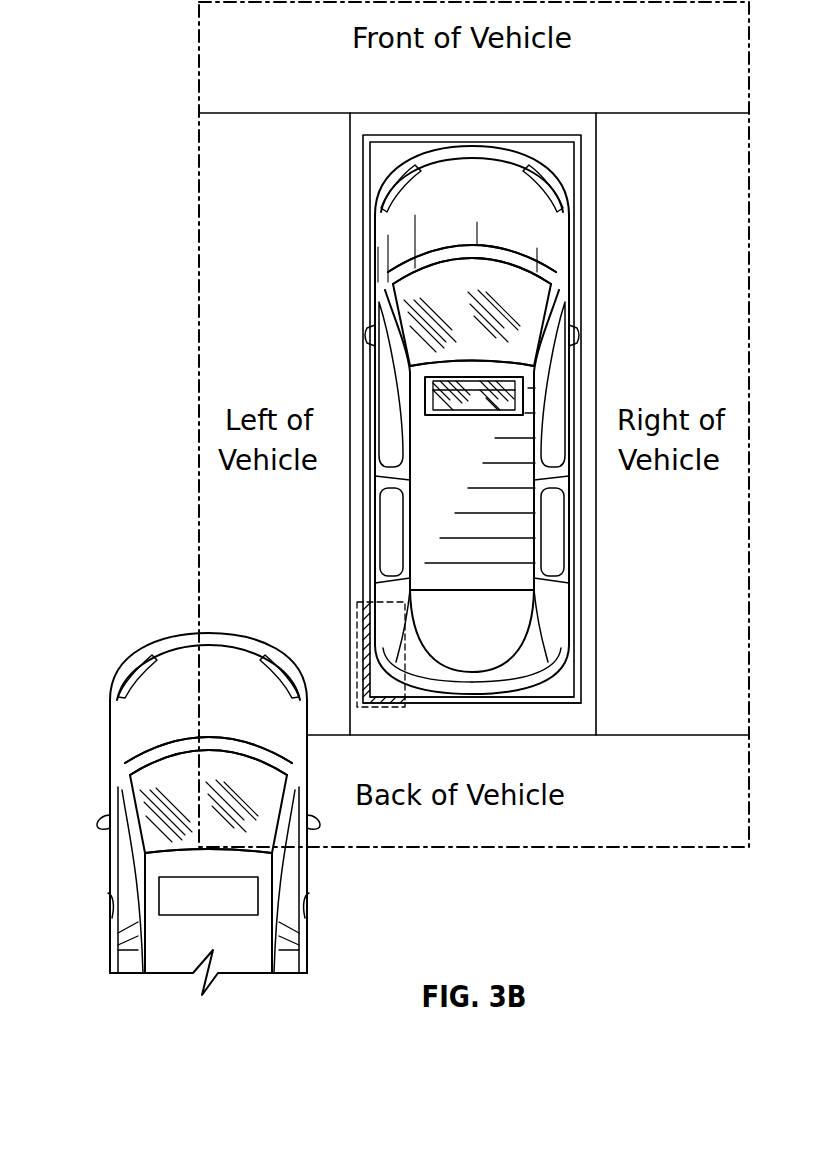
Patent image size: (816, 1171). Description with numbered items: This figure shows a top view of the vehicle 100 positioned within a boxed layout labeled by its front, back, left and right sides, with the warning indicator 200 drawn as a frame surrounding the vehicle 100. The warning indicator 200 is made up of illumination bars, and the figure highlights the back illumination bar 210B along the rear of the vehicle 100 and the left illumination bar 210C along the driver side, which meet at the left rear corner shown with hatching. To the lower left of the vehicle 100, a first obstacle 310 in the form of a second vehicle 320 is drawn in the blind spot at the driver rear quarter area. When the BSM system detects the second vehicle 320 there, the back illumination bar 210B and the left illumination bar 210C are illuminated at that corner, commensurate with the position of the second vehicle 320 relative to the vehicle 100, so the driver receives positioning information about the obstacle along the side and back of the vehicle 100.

The vehicle 100 is at (545, 215).
The warning indicator 200 is at (567, 135).
The back illumination bar 210B is at (547, 707).
The left illumination bar 210C is at (363, 272).
The first obstacle 310 is at (147, 697).
The second vehicle 320 is at (208, 814).